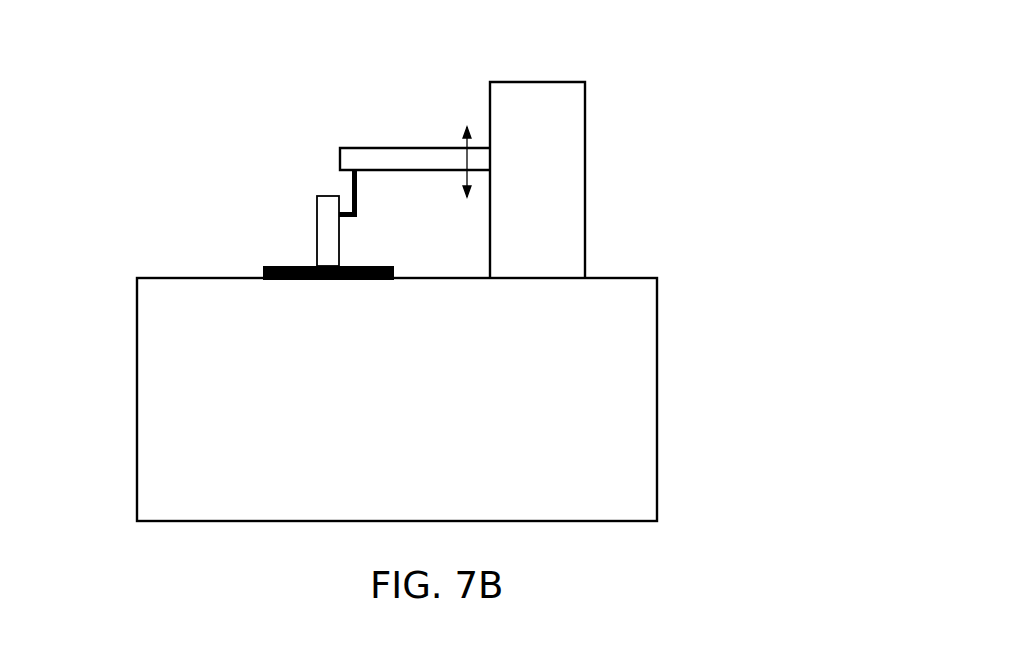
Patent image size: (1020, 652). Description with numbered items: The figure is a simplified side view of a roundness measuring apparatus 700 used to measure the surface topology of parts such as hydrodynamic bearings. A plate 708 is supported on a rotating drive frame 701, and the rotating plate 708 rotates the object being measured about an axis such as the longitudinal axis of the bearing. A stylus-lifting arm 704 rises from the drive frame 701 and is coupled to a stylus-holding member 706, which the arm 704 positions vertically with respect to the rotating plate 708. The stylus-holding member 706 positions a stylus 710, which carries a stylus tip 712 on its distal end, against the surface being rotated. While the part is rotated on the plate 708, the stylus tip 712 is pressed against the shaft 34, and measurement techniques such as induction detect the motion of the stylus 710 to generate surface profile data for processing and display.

The roundness measuring apparatus 700 is at (657, 82).
The rotating drive frame 701 is at (657, 417).
The stylus-lifting arm 704 is at (537, 82).
The stylus-holding member 706 is at (440, 148).
The shaft 34 is at (317, 211).
The plate 708 is at (263, 270).
The stylus 710 is at (358, 183).
The stylus tip 712 is at (350, 218).